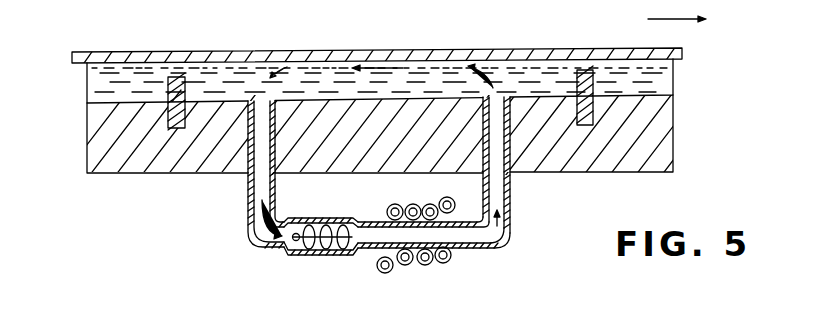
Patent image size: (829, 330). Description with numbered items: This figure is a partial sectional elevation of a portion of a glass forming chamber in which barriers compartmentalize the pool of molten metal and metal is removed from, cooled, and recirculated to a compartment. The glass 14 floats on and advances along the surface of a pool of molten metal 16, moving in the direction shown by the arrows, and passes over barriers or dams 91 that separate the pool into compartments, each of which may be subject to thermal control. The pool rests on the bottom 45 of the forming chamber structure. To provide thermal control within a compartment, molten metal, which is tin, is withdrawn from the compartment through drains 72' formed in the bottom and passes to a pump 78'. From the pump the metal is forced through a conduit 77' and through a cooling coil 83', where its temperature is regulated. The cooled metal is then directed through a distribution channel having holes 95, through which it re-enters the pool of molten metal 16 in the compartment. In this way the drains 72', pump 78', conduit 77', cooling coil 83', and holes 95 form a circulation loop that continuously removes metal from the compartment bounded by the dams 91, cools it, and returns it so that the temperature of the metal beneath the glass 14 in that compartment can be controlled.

The glass 14 is at (383, 52).
The pool of molten metal 16 is at (92, 86).
The bottom 45 is at (663, 131).
The barriers or dams 91 is at (176, 76).
The drains 72' is at (235, 174).
The pump 78' is at (321, 265).
The conduit 77' is at (446, 249).
The holes 95 is at (512, 150).
The cooling coil 83' is at (419, 250).